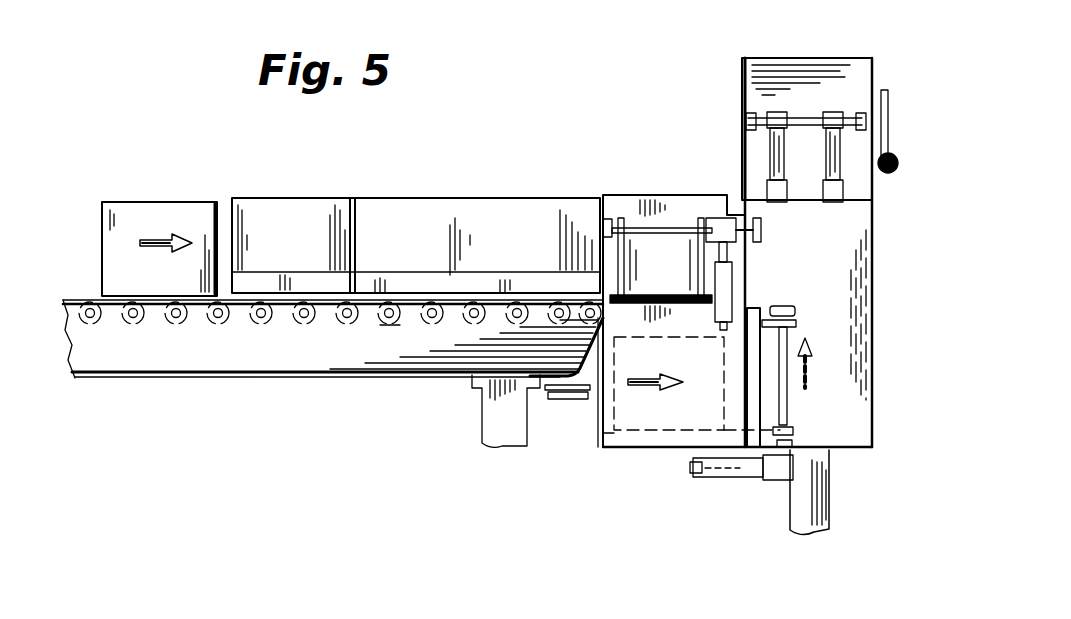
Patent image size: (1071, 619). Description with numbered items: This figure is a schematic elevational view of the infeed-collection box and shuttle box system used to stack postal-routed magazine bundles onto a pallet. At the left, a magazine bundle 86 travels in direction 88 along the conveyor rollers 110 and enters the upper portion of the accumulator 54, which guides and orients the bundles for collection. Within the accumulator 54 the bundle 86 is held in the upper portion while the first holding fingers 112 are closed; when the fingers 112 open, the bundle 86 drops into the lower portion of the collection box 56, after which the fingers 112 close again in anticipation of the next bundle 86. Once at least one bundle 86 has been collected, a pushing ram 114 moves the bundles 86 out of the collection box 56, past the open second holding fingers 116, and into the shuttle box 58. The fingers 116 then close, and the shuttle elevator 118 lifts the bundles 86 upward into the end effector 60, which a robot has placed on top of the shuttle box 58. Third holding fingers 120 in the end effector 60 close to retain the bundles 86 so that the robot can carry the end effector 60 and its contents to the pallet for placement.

The accumulator 54 is at (485, 210).
The collection box 56 is at (671, 199).
The shuttle box 58 is at (858, 310).
The end effector 60 is at (871, 72).
The magazine bundle 86 is at (118, 202).
The direction 88 is at (155, 240).
The conveyor rollers 110 is at (176, 326).
The first holding fingers 112 is at (657, 290).
The pushing ram 114 is at (566, 400).
The second holding fingers 116 is at (750, 390).
The shuttle elevator 118 is at (808, 515).
The third holding fingers 120 is at (837, 157).